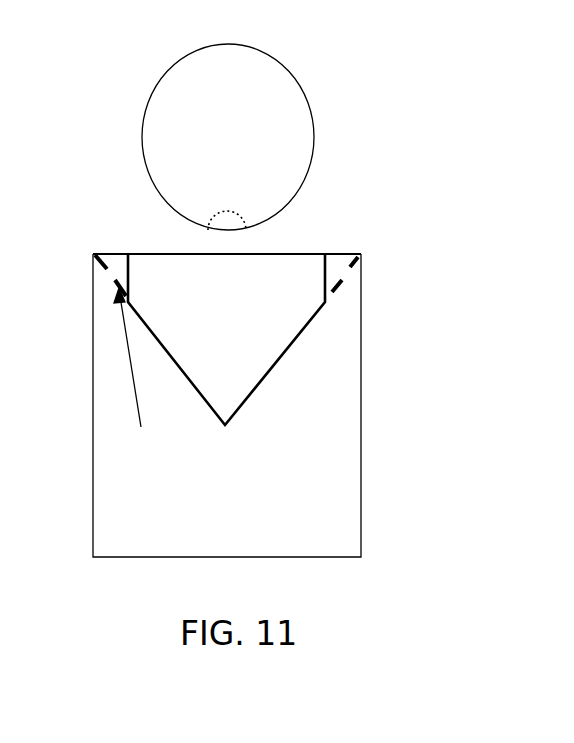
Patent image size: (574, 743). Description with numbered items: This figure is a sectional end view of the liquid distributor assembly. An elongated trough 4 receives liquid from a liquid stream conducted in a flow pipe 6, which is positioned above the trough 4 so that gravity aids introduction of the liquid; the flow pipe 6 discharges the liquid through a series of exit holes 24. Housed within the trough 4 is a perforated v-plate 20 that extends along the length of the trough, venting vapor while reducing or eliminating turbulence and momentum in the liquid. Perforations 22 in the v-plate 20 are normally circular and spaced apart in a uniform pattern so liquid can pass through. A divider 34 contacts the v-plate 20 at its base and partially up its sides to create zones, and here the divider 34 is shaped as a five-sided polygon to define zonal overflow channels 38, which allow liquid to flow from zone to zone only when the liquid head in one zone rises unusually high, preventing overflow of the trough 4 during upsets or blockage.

The trough 4 is at (115, 520).
The flow pipe 6 is at (302, 87).
The v-plate 20 is at (96, 256).
The perforations 22 is at (112, 270).
The exit holes 24 is at (230, 225).
The divider 34 is at (298, 253).
The zonal overflow channel 38 is at (338, 265).